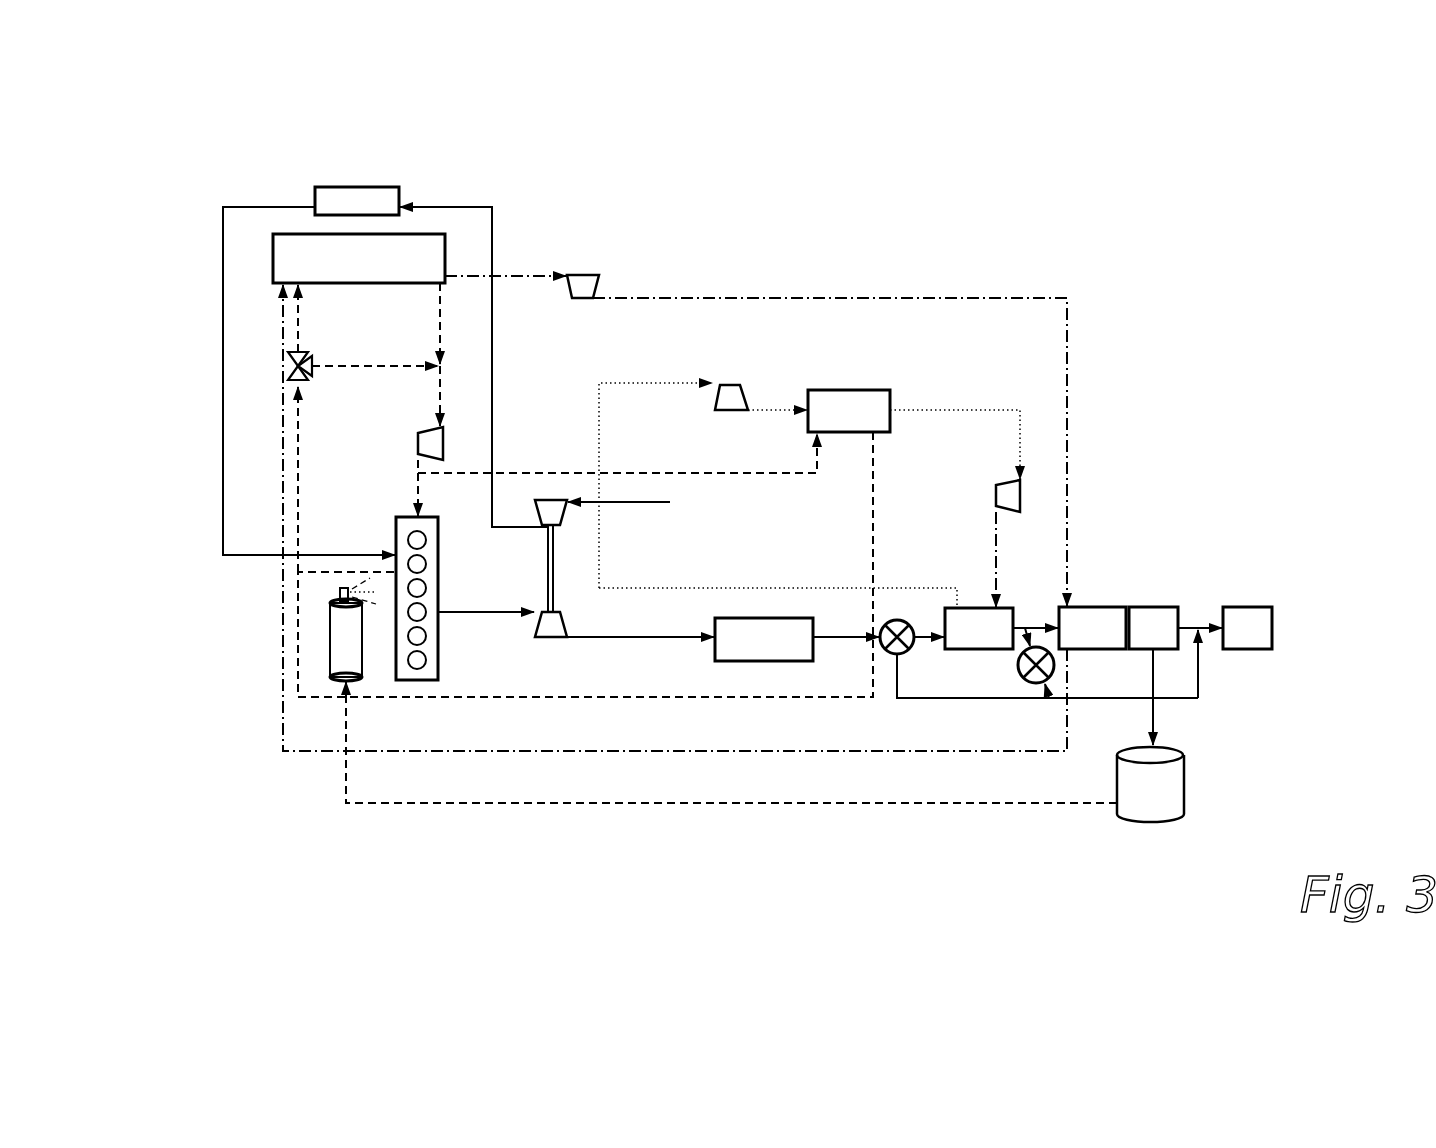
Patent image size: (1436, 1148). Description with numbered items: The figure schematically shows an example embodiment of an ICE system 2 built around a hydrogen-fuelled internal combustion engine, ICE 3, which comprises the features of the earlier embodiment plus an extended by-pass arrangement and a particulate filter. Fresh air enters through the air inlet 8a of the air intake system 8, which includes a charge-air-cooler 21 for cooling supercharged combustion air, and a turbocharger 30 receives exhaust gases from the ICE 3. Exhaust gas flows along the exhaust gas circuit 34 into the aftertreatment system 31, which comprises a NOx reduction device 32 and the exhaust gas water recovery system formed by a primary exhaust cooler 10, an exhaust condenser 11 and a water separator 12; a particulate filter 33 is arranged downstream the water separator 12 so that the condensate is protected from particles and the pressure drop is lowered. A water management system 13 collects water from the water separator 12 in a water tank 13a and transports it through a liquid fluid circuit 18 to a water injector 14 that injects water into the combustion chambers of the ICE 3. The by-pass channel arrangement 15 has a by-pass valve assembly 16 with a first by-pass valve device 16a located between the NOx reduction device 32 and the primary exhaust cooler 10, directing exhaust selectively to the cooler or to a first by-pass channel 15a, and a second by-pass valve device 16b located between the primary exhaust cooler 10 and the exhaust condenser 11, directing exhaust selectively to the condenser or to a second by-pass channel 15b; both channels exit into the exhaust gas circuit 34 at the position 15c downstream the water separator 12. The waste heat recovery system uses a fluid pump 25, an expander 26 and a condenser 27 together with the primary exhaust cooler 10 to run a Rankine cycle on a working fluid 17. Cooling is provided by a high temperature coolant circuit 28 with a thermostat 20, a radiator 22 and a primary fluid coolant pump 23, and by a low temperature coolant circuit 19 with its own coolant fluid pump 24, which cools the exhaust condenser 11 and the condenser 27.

The ICE system 2 is at (217, 141).
The ICE 3 is at (396, 528).
The air intake system 8 is at (629, 467).
The air inlet 8a is at (623, 502).
The primary exhaust cooler 10 is at (975, 608).
The exhaust condenser 11 is at (1093, 607).
The water separator 12 is at (1153, 607).
The water management system 13 is at (745, 735).
The water tank 13a is at (1165, 790).
The water injector 14 is at (340, 655).
The by-pass channel arrangement 15 is at (1020, 684).
The first by-pass channel 15a is at (893, 697).
The second by-pass channel 15b is at (1047, 687).
The position in the exhaust gas circuit 15c is at (1200, 652).
The by-pass valve assembly 16 is at (915, 642).
The first by-pass valve device 16a is at (893, 620).
The second by-pass valve device 16b is at (1018, 668).
The working fluid 17 is at (766, 588).
The liquid fluid circuit 18 is at (850, 803).
The low temperature coolant circuit 19 is at (900, 298).
The thermostat 20 is at (290, 362).
The charge-air-cooler 21 is at (366, 190).
The radiator 22 is at (360, 273).
The primary fluid coolant pump 23 is at (444, 440).
The coolant fluid pump 24 is at (582, 278).
The fluid pump 25 is at (1022, 495).
The expander 26 is at (742, 392).
The condenser 27 is at (853, 390).
The high temperature coolant circuit 28 is at (876, 497).
The turbocharger 30 is at (548, 575).
The aftertreatment system 31 is at (764, 639).
The NOx reduction device 32 is at (764, 639).
The particulate filter 33 is at (1250, 607).
The exhaust gas circuit 34 is at (637, 640).